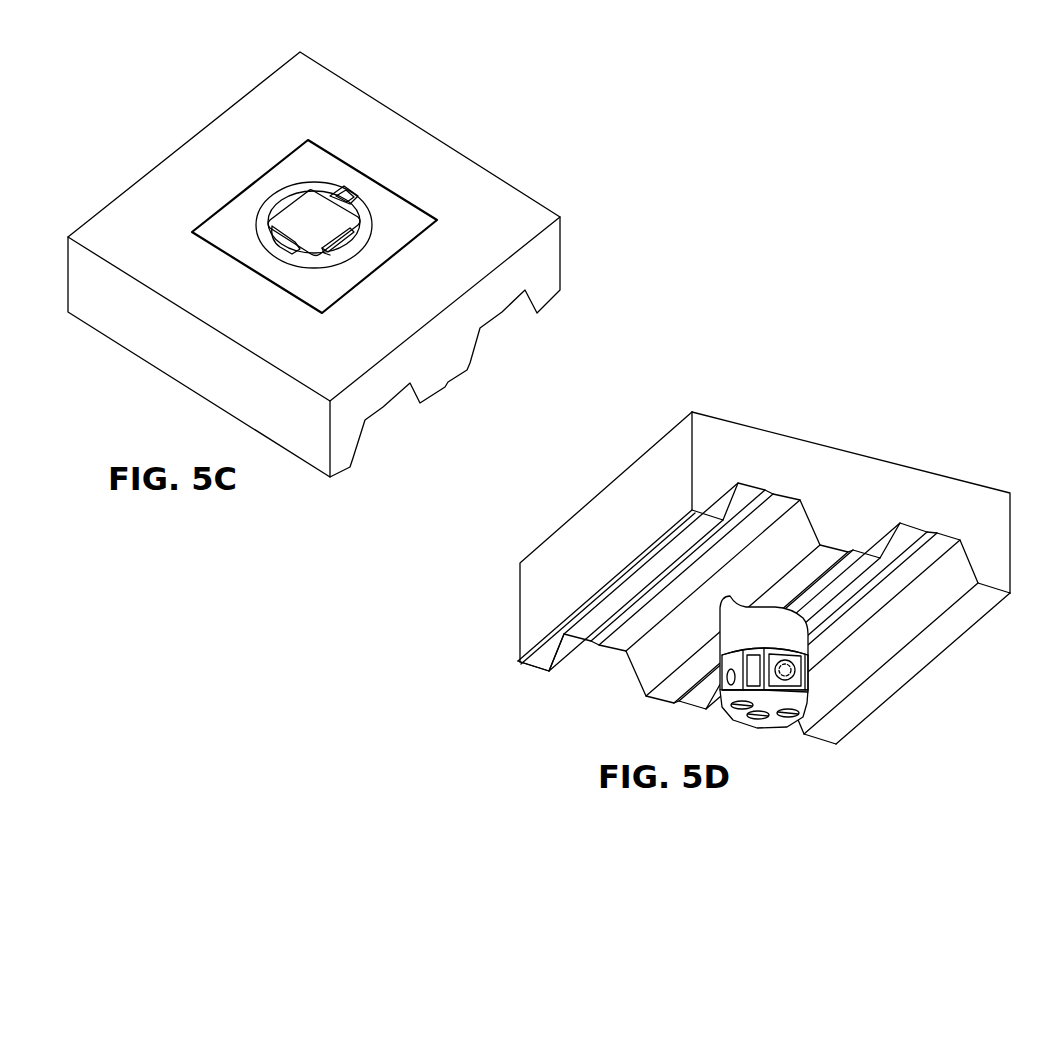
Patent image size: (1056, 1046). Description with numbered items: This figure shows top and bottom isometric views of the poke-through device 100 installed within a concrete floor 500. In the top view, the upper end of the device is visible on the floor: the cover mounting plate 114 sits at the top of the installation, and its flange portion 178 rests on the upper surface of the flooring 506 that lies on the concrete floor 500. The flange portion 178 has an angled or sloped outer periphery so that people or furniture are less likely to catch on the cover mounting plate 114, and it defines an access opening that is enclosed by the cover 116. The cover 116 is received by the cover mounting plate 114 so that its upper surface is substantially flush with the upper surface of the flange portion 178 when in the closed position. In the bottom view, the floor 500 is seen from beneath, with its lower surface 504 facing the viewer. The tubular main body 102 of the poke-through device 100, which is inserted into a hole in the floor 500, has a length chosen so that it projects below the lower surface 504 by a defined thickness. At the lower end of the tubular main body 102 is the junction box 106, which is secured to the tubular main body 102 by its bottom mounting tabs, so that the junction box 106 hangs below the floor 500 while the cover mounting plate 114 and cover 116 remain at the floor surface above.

In FIG. 5C, the poke-through device 100 is at (362, 188).
In FIG. 5C, the cover mounting plate 114 is at (328, 186).
In FIG. 5C, the cover 116 is at (326, 224).
In FIG. 5C, the flange portion 178 is at (262, 230).
In FIG. 5C, the flooring 506 is at (214, 228).
In FIG. 5C, the floor 500 is at (470, 194).
In FIG. 5D, the floor 500 is at (843, 463).
In FIG. 5D, the lower surface 504 is at (553, 657).
In FIG. 5D, the tubular main body 102 is at (768, 635).
In FIG. 5D, the junction box 106 is at (742, 678).